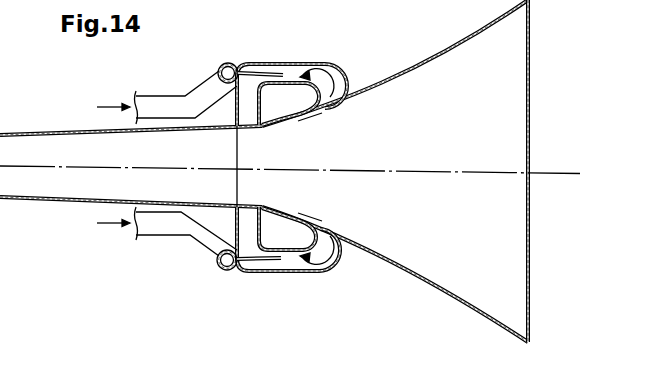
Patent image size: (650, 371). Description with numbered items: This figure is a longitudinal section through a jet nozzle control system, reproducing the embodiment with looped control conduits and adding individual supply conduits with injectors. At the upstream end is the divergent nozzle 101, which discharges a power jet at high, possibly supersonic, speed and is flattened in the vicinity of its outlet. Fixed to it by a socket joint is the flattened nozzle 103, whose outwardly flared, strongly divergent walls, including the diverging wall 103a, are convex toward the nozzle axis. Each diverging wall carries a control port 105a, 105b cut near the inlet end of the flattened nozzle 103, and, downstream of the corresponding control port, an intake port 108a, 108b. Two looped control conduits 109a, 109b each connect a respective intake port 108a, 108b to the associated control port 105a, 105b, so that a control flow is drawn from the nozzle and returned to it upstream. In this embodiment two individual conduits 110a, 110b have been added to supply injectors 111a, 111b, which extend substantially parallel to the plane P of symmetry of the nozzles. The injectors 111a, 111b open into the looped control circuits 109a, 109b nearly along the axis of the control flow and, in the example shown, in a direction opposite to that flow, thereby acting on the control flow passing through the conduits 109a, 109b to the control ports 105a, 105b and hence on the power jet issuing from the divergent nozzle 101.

The divergent nozzle 101 is at (44, 143).
The flattened nozzle 103 is at (517, 57).
The diverging wall 103a is at (421, 60).
The control port 105a is at (241, 128).
The control port 105b is at (238, 207).
The intake port 108a is at (322, 111).
The intake port 108b is at (320, 228).
The looped control conduit 109a is at (320, 63).
The looped control conduit 109b is at (310, 272).
The individual conduit 110a is at (162, 107).
The individual conduit 110b is at (177, 226).
The injector 111a is at (271, 63).
The injector 111b is at (275, 268).
The plane of symmetry P is at (545, 173).